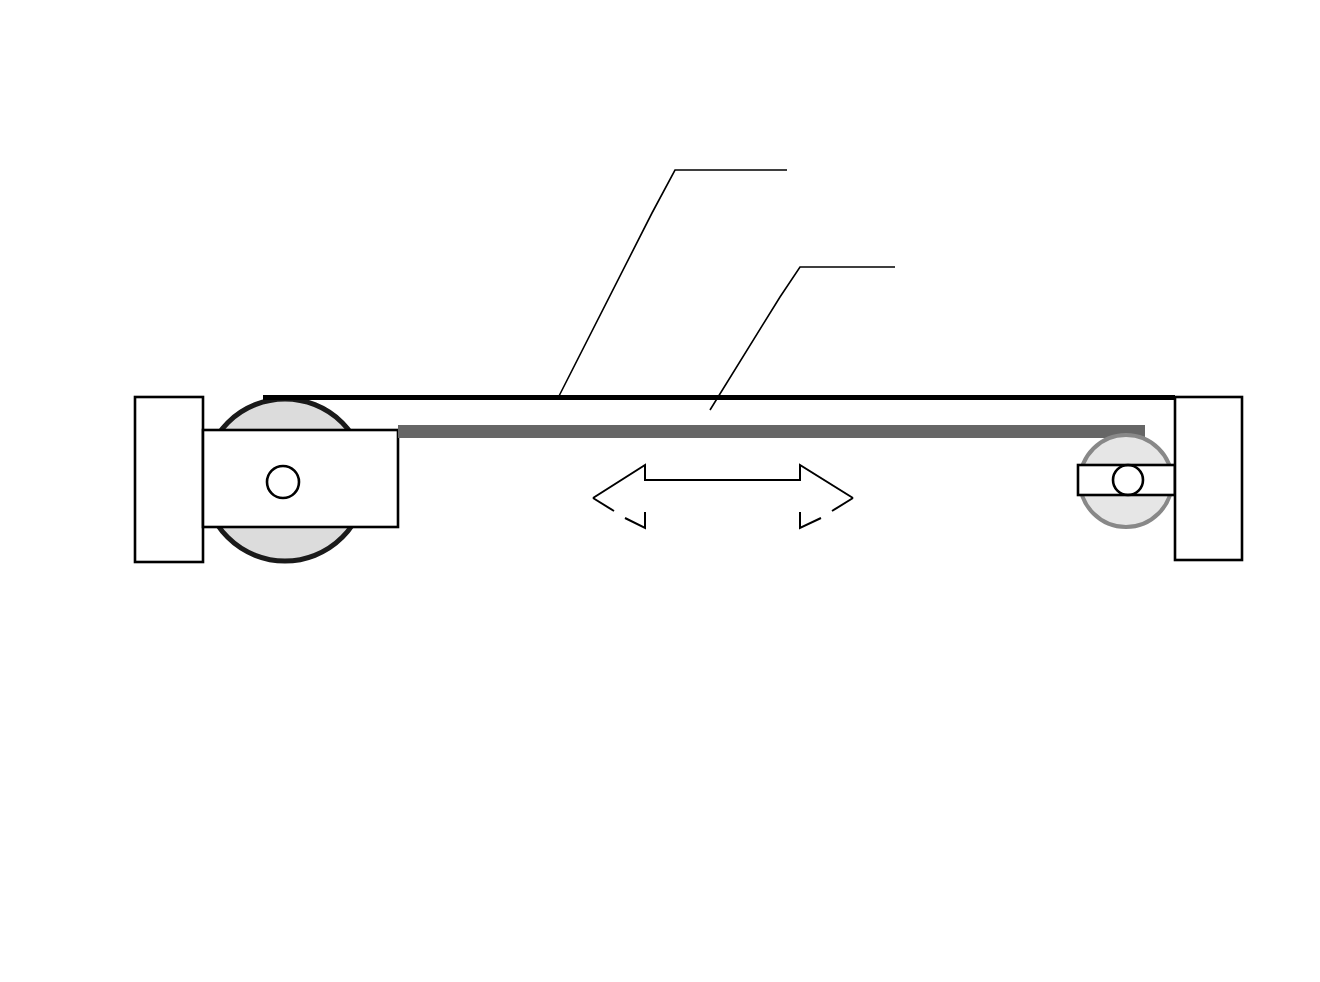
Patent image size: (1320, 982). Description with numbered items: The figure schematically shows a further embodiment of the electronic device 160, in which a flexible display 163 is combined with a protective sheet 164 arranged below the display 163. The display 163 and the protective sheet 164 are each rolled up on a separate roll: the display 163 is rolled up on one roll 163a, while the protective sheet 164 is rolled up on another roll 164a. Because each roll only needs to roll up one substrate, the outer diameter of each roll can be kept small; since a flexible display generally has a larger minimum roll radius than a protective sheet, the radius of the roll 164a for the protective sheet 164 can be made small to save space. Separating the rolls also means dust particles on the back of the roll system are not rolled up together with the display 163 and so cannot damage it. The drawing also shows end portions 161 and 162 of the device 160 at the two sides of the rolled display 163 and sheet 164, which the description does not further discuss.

The electronic device 160 is at (703, 430).
The left housing 161 is at (160, 412).
The right housing 162 is at (1225, 425).
The display 163 is at (422, 397).
The roll 163a is at (318, 553).
The protective sheet 164 is at (550, 435).
The roll 164a is at (1097, 513).